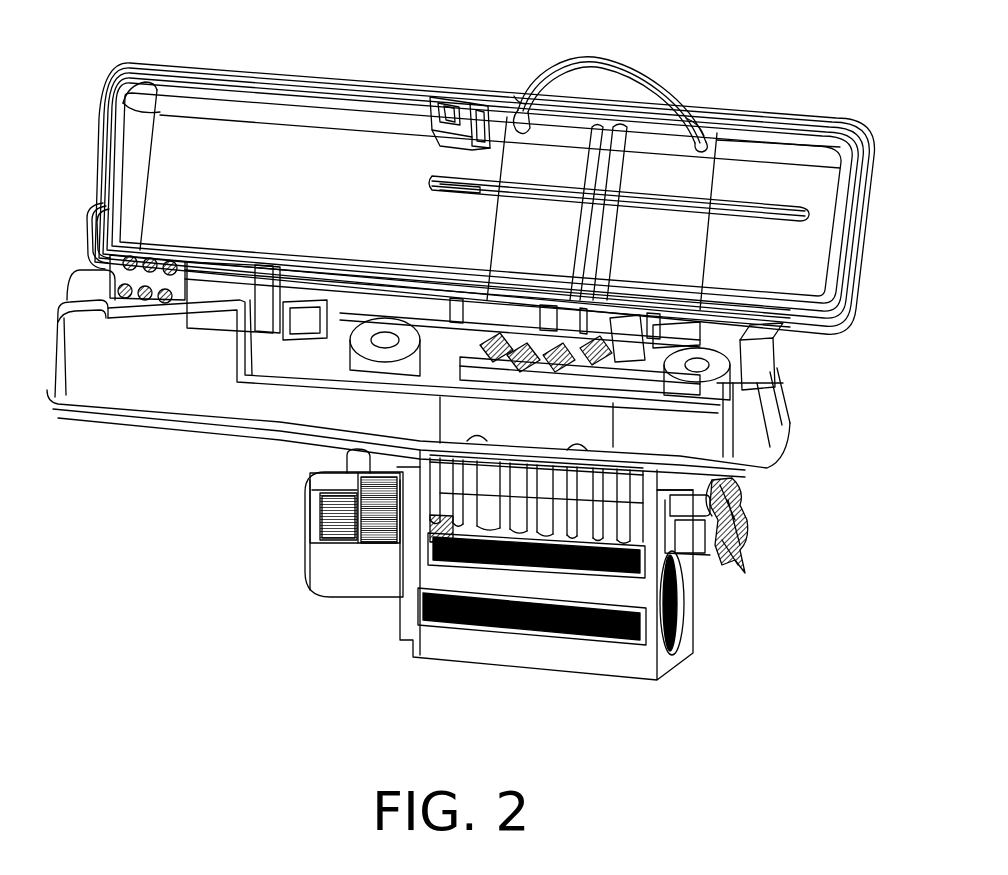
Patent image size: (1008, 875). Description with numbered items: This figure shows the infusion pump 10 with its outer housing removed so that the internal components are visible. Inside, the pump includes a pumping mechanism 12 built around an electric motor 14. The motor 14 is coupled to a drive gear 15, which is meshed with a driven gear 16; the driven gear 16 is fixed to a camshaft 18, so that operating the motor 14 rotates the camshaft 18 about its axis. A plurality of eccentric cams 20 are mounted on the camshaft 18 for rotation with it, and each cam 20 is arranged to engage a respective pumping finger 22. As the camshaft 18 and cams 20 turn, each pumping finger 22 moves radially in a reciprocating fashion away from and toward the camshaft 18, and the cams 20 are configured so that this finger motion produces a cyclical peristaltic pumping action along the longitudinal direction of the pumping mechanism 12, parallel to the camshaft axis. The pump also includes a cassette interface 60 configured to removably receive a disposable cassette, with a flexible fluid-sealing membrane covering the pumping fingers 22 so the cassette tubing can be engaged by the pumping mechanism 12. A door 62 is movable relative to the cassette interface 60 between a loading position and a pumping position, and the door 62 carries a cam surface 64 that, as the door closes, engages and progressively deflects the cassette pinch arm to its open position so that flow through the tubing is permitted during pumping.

The infusion pump 10 is at (757, 60).
The pumping mechanism 12 is at (262, 499).
The electric motor 14 is at (483, 627).
The drive gear 15 is at (358, 543).
The driven gear 16 is at (357, 492).
The camshaft 18 is at (727, 510).
The eccentric cams 20 is at (513, 500).
The pumping fingers 22 is at (562, 352).
The cassette interface 60 is at (333, 368).
The door 62 is at (281, 195).
The cam surface 64 is at (432, 128).